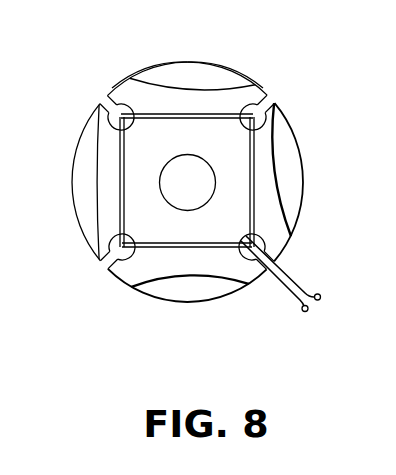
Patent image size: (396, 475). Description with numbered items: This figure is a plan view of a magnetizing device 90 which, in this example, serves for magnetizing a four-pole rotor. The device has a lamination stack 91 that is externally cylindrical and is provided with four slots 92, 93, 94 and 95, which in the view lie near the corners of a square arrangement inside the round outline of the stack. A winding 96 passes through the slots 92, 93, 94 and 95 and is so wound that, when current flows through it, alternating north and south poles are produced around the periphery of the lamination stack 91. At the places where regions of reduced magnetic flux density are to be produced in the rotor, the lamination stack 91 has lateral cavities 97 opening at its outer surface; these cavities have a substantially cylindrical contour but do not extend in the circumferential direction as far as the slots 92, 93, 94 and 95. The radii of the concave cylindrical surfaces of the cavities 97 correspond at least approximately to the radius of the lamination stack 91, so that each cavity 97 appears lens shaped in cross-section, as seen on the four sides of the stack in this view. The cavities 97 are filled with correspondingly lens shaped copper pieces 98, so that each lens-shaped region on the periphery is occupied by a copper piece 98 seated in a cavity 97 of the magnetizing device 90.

The magnetizing device 90 is at (266, 69).
The lamination stack 91 is at (187, 180).
The slot 92 is at (268, 101).
The slot 93 is at (110, 102).
The slot 94 is at (110, 259).
The slot 95 is at (276, 266).
The winding 96 is at (226, 251).
The lateral cavity 97 is at (165, 81).
The copper piece 98 is at (197, 73).